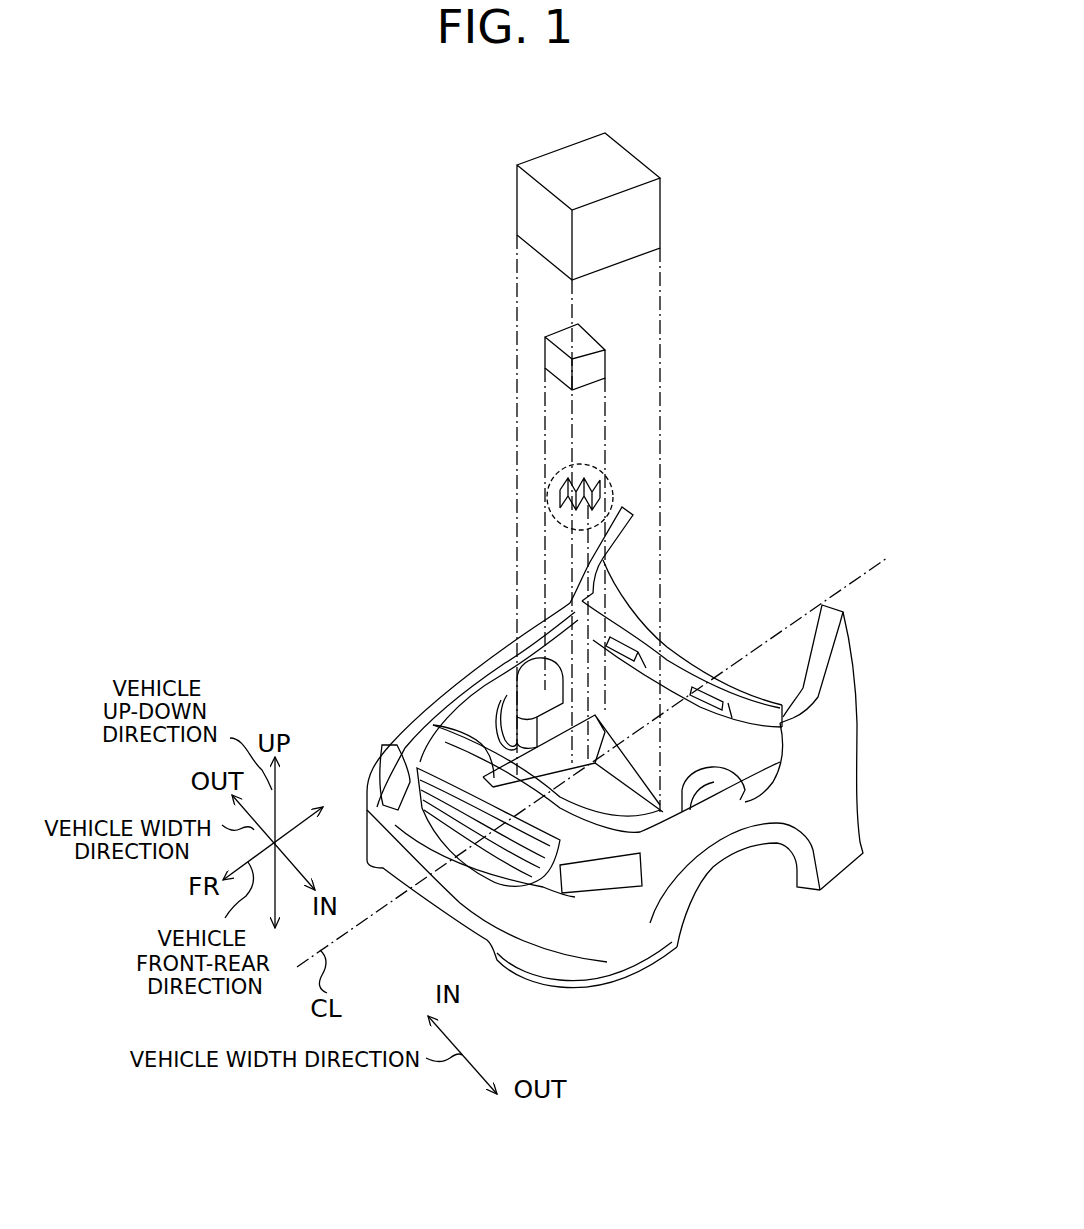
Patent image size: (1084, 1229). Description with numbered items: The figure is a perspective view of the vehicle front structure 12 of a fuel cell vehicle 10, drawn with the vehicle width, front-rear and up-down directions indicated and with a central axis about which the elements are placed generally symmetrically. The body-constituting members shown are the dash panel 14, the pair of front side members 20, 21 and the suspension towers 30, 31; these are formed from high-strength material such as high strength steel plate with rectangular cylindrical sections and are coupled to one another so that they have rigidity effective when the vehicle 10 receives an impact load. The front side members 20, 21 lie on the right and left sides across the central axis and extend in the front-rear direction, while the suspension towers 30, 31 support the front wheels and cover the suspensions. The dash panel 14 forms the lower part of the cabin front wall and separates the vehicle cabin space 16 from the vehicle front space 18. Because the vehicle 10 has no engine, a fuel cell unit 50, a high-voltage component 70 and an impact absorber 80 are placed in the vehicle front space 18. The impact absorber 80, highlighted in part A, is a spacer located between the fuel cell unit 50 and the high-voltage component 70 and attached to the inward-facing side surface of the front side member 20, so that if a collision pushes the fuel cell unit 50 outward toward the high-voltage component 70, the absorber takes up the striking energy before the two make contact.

The fuel cell vehicle 10 is at (661, 747).
The vehicle front structure 12 is at (478, 627).
The dash panel 14 is at (690, 733).
The vehicle cabin space 16 is at (724, 628).
The vehicle front space 18 is at (582, 810).
The front side member 20 is at (493, 775).
The front side member 21 is at (672, 815).
The suspension tower 30 is at (535, 693).
The suspension tower 31 is at (713, 790).
The fuel cell unit 50 is at (637, 160).
The high-voltage component 70 is at (598, 337).
The impact absorber 80 is at (603, 476).
The part A is at (563, 470).